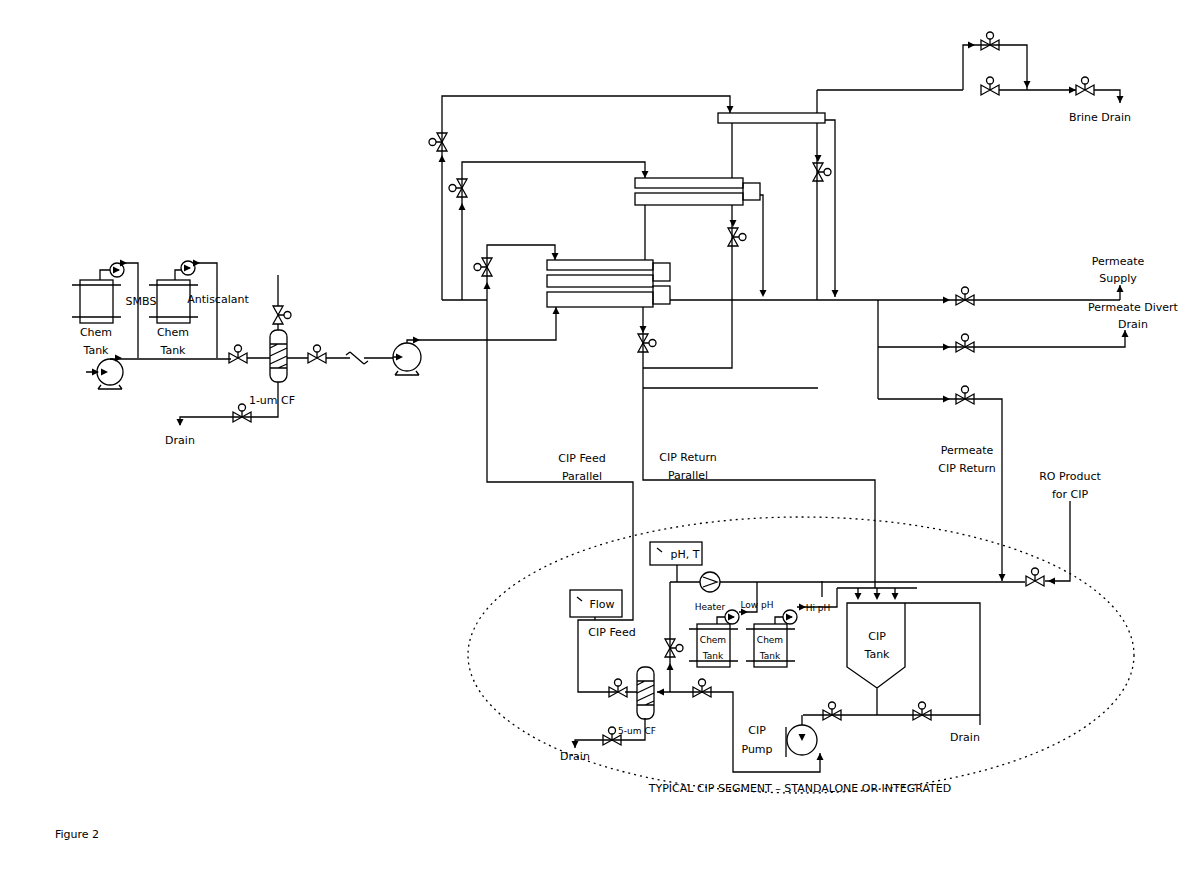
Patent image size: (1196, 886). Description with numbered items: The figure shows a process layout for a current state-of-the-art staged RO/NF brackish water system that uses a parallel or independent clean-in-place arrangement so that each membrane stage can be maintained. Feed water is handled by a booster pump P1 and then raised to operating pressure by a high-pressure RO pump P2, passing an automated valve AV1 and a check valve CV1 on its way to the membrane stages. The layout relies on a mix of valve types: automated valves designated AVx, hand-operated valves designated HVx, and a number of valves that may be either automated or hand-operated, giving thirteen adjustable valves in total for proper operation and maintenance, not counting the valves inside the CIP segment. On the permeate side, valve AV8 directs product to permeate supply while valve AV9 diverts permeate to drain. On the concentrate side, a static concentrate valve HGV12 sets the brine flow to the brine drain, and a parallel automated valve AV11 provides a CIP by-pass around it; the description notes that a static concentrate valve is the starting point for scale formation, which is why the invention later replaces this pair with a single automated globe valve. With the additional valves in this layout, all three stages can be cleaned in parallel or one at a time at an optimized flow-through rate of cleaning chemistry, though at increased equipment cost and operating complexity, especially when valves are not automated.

The automated valve AV1 is at (237, 366).
The automated valve AV8 is at (964, 304).
The automated valve AV9 is at (964, 351).
The parallel valve for CIP by-pass AV11 is at (990, 49).
The static concentrate valve HGV12 is at (990, 94).
The check valve CV1 is at (357, 369).
The LP booster pump P1 is at (109, 393).
The HP RO pump P2 is at (465, 362).
The hand-operated valve HVx is at (582, 534).
The automated valve AVx is at (1035, 586).